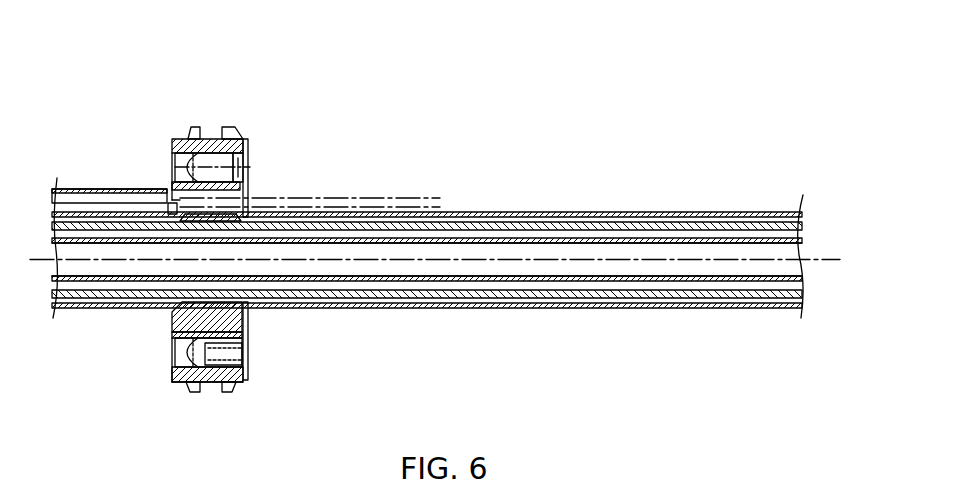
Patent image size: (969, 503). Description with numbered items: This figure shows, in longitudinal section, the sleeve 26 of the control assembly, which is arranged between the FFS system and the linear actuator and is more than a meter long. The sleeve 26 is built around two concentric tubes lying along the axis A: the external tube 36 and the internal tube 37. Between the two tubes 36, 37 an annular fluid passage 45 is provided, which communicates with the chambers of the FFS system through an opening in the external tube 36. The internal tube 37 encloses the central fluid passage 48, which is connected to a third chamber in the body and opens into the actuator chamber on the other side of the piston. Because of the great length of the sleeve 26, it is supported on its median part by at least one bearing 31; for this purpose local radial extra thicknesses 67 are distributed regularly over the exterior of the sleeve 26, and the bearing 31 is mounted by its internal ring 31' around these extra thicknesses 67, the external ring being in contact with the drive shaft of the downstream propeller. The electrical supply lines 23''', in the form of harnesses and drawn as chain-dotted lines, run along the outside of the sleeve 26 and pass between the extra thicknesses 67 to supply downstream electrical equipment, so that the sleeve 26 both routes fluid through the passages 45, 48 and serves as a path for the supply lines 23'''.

The sleeve 26 is at (654, 199).
The annular fluid passage 45 is at (530, 236).
The central fluid passage 48 is at (375, 268).
The longitudinal axis A is at (822, 258).
The internal tube 37 is at (598, 282).
The external tube 36 is at (460, 298).
The electrical supply lines 23''' is at (310, 162).
The bearing 31 is at (230, 136).
The internal ring 31' is at (173, 377).
The local radial extra thicknesses 67 is at (183, 317).